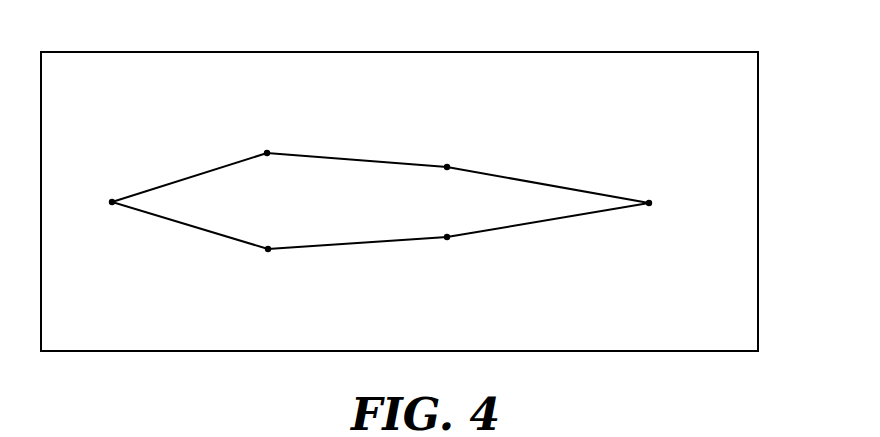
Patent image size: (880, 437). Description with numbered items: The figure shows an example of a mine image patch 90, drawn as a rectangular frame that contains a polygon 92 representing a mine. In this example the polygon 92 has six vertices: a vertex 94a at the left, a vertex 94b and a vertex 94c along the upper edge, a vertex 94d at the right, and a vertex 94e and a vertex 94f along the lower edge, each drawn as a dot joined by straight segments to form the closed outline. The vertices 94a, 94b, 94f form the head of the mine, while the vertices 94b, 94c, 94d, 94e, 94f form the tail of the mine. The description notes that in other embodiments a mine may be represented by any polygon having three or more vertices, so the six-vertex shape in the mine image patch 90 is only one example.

The mine image patch 90 is at (758, 184).
The polygon 92 is at (365, 213).
The vertex 94a is at (112, 202).
The vertex 94b is at (267, 153).
The vertex 94c is at (447, 167).
The vertex 94d is at (649, 203).
The vertex 94e is at (447, 237).
The vertex 94f is at (268, 249).